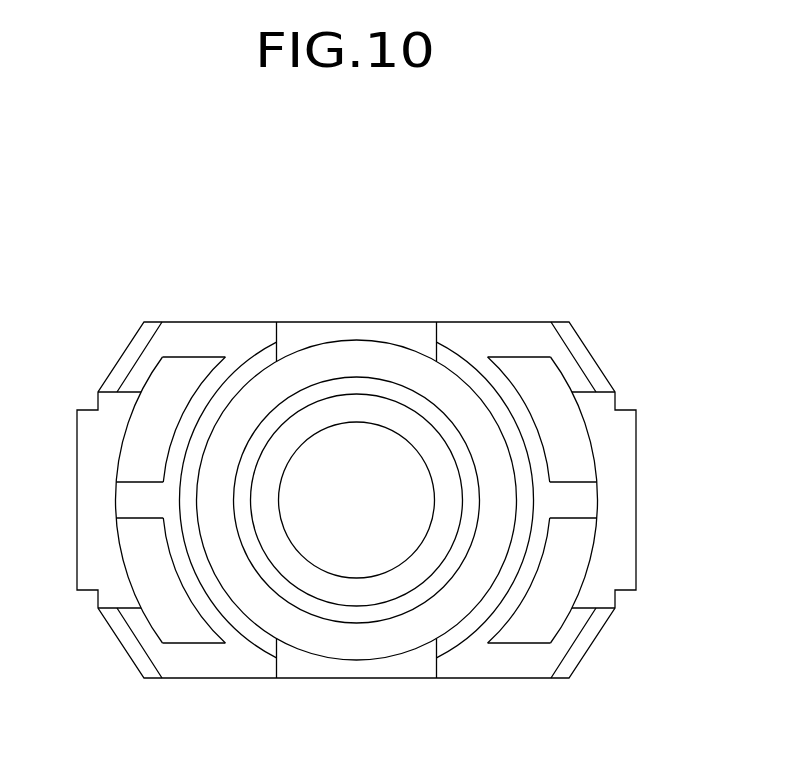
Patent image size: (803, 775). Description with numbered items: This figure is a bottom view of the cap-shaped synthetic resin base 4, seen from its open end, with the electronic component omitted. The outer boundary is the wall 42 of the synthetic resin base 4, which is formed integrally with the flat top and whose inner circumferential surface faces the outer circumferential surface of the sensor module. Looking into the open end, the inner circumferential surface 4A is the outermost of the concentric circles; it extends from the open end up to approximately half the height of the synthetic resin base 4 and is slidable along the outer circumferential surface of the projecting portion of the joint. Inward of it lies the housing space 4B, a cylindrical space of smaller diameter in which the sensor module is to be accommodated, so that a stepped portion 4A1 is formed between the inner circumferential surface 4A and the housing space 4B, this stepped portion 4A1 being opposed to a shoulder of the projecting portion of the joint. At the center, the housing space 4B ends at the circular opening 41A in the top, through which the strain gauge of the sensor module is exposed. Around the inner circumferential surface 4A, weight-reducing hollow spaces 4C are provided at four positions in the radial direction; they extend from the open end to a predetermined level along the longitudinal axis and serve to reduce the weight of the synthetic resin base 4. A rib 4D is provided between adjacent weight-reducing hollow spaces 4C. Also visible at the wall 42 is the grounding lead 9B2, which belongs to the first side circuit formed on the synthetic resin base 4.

The synthetic resin base 4 is at (583, 238).
The wall 42 is at (623, 392).
The inner circumferential surface 4A is at (334, 660).
The stepped portion 4A1 is at (483, 533).
The housing space 4B is at (260, 538).
The circular opening 41A is at (298, 452).
The weight-reducing hollow space 4C is at (197, 357).
The rib 4D is at (132, 503).
The grounding lead 9B2 is at (170, 332).